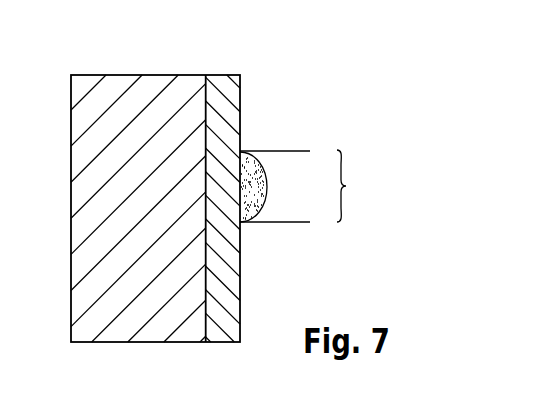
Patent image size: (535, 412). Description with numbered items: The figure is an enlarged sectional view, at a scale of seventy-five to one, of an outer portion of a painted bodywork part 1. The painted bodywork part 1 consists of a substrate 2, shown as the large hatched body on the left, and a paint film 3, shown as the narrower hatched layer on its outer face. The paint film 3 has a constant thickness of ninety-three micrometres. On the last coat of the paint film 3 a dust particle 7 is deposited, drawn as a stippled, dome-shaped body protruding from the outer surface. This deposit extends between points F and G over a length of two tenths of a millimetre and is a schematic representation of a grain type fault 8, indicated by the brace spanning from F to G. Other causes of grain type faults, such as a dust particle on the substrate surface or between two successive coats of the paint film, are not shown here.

The painted bodywork part 1 is at (164, 184).
The substrate 2 is at (107, 197).
The paint film 3 is at (236, 94).
The dust particle 7 is at (258, 204).
The grain type fault 8 is at (301, 187).